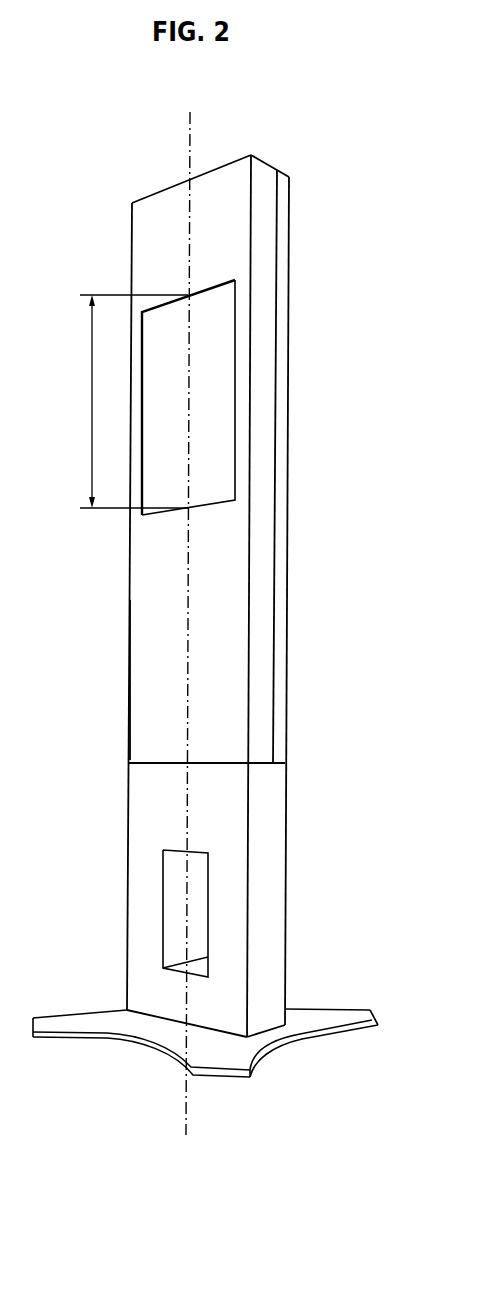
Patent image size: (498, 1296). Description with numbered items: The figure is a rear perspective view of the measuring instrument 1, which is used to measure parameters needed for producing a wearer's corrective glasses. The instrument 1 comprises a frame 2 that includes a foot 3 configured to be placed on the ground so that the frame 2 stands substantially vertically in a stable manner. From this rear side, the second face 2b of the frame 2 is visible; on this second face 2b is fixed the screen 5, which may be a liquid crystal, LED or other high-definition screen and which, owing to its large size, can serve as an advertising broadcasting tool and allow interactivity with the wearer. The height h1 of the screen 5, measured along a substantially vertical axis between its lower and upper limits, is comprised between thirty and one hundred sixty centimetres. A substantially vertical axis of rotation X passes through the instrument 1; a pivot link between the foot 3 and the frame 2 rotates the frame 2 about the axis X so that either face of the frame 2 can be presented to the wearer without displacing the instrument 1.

The measuring instrument 1 is at (366, 311).
The frame 2 is at (218, 629).
The second face of the frame 2b is at (159, 689).
The foot 3 is at (218, 1059).
The screen 5 is at (219, 412).
The axis of rotation X is at (190, 128).
The height of the screen h1 is at (126, 401).